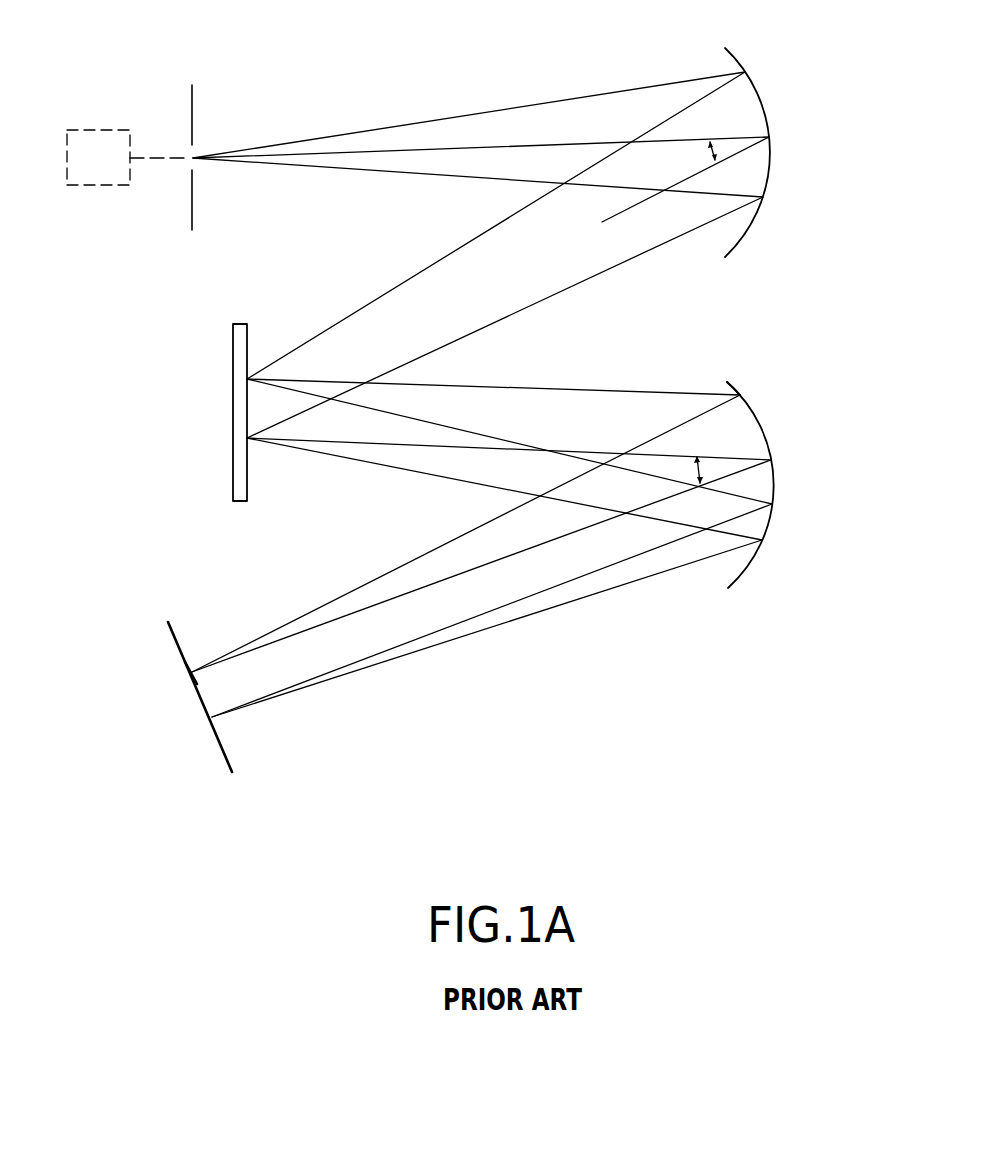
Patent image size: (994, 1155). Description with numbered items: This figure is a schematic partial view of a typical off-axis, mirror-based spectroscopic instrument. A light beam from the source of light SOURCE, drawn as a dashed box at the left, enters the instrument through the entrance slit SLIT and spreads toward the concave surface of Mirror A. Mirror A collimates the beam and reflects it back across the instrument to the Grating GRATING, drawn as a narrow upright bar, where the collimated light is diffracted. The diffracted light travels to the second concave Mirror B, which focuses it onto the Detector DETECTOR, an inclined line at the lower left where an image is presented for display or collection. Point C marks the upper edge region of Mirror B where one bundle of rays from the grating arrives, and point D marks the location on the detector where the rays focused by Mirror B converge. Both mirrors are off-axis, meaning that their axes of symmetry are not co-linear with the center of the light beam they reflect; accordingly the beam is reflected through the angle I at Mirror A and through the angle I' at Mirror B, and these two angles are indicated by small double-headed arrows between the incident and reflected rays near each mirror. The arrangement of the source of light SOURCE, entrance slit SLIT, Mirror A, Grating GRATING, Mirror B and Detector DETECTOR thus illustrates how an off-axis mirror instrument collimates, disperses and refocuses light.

The Mirror A is at (806, 152).
The Mirror B is at (807, 485).
The point C on mirror B C is at (751, 386).
The point D on detector D is at (200, 655).
The angle I is at (707, 154).
The angle I' is at (694, 469).
The entrance slit SLIT is at (188, 148).
The source of light SOURCE is at (92, 187).
The grating GRATING is at (233, 430).
The detector DETECTOR is at (212, 728).